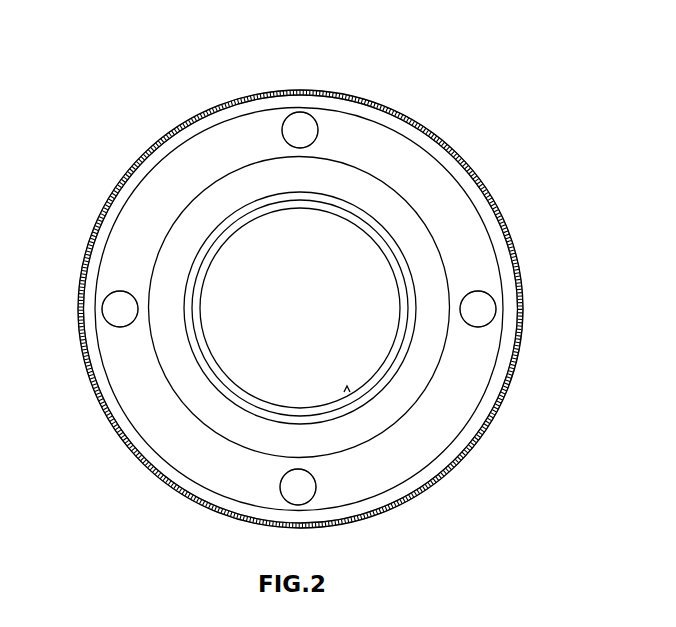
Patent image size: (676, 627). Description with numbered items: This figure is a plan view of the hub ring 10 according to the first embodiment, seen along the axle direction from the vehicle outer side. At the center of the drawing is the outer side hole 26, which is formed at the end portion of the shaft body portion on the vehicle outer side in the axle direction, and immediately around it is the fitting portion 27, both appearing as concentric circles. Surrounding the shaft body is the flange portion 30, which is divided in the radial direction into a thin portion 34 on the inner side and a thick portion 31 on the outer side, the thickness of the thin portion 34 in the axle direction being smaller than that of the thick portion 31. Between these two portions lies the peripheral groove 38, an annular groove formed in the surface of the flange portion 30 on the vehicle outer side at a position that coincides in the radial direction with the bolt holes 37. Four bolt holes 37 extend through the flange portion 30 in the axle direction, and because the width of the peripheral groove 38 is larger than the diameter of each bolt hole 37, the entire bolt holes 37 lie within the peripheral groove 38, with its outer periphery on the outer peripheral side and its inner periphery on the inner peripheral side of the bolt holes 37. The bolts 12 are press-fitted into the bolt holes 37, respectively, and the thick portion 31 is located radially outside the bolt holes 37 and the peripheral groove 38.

The hub ring 10 is at (474, 167).
The bolts 12 is at (122, 291).
The outer side hole 26 is at (355, 400).
The fitting portion 27 is at (404, 350).
The flange portion 30 is at (432, 126).
The thick portion 31 is at (489, 405).
The thin portion 34 is at (468, 227).
The bolt holes 37 is at (123, 327).
The peripheral groove 38 is at (412, 468).